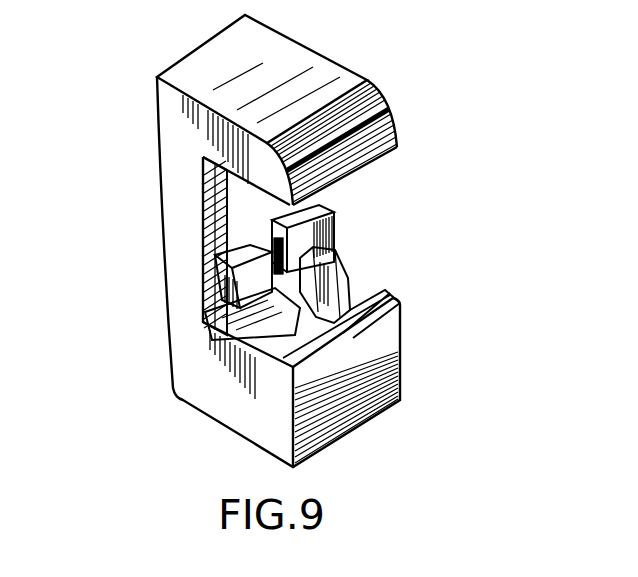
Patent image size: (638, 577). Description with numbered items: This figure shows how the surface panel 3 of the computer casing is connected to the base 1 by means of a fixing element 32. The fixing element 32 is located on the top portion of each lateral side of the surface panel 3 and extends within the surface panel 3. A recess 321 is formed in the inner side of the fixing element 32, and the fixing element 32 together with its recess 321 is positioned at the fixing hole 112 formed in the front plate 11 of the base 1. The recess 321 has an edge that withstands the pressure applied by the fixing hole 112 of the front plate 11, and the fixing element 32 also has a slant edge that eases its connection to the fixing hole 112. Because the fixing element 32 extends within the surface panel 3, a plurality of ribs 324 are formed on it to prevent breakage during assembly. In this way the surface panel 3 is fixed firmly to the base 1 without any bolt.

The base 1 is at (313, 307).
The surface panel 3 is at (370, 77).
The front plate 11 is at (213, 222).
The fixing element 32 is at (300, 208).
The recess 321 is at (333, 230).
The fixing hole 112 is at (347, 272).
The ribs 324 is at (240, 323).